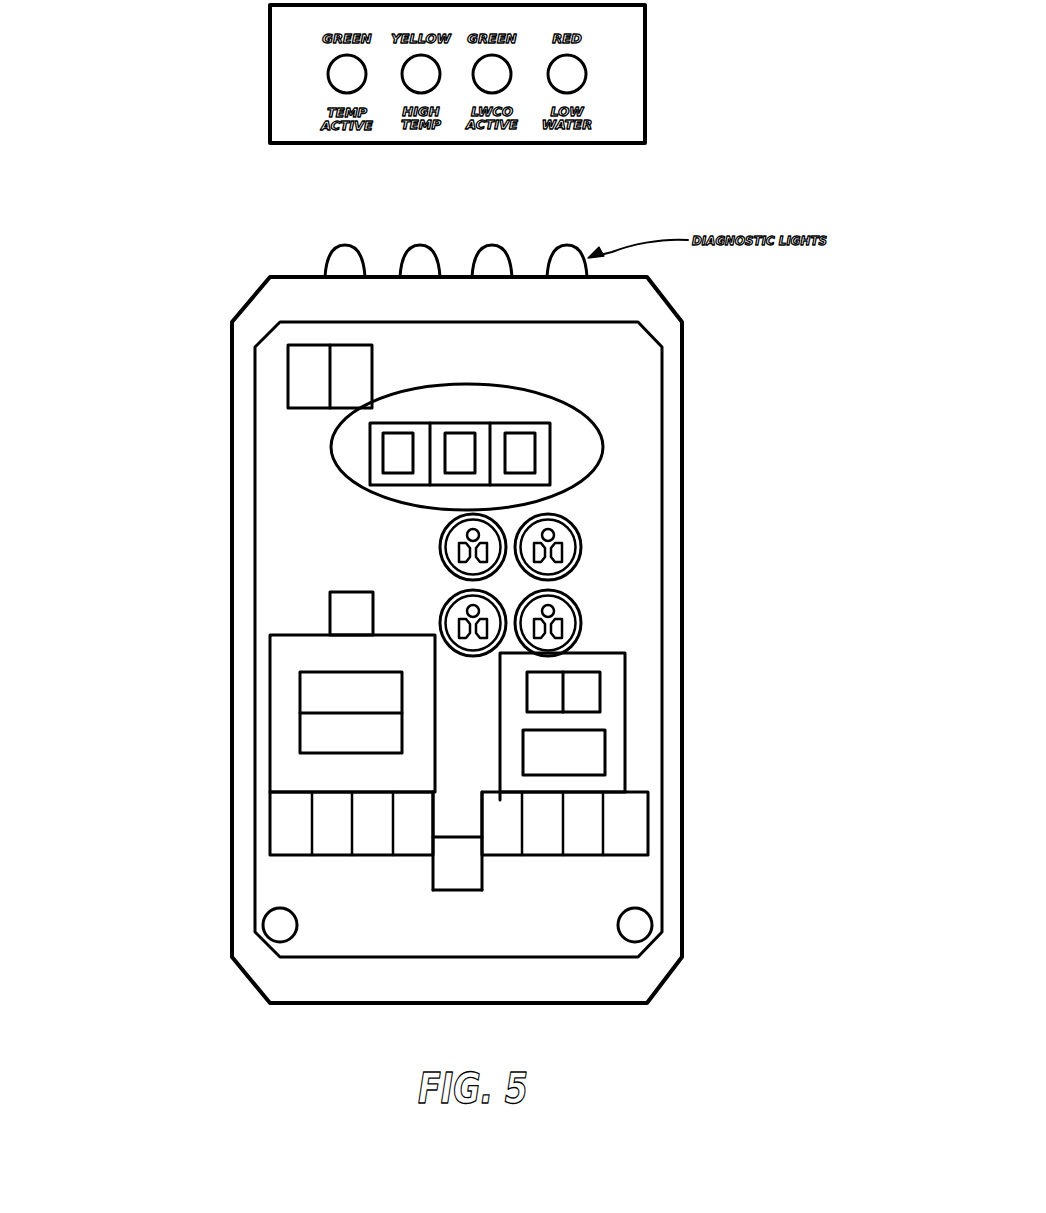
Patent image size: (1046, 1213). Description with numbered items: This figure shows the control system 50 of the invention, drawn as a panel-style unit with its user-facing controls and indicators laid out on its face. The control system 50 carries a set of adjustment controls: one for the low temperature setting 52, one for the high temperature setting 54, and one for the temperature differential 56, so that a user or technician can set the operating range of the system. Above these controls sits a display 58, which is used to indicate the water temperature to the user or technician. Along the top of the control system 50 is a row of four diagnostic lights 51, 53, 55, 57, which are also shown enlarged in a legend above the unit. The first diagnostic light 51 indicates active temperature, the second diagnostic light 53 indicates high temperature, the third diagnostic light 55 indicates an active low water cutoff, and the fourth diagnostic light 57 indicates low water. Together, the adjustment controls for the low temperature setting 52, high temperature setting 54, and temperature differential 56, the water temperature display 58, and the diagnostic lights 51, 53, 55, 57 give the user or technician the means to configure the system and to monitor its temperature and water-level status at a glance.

The control system 50 is at (860, 295).
The diagnostic light 51 is at (332, 82).
The low temperature setting 52 is at (430, 541).
The diagnostic light 53 is at (402, 88).
The high temperature setting 54 is at (593, 535).
The diagnostic light 55 is at (511, 88).
The temperature differential 56 is at (430, 614).
The diagnostic light 57 is at (585, 88).
The display 58 is at (606, 432).